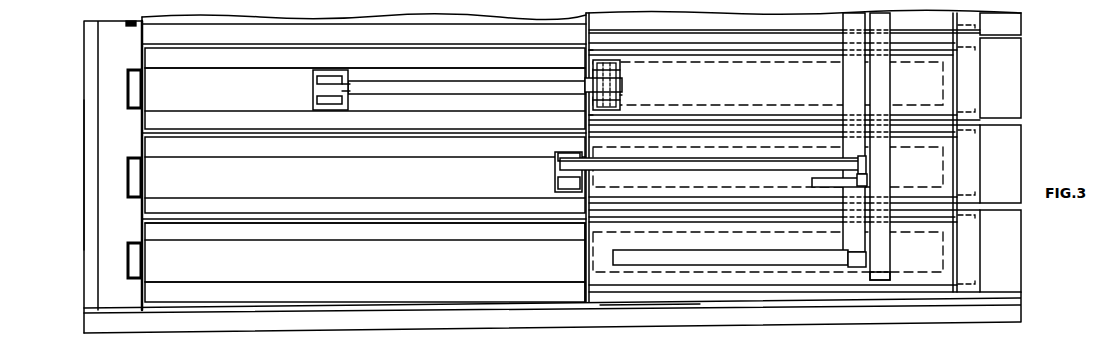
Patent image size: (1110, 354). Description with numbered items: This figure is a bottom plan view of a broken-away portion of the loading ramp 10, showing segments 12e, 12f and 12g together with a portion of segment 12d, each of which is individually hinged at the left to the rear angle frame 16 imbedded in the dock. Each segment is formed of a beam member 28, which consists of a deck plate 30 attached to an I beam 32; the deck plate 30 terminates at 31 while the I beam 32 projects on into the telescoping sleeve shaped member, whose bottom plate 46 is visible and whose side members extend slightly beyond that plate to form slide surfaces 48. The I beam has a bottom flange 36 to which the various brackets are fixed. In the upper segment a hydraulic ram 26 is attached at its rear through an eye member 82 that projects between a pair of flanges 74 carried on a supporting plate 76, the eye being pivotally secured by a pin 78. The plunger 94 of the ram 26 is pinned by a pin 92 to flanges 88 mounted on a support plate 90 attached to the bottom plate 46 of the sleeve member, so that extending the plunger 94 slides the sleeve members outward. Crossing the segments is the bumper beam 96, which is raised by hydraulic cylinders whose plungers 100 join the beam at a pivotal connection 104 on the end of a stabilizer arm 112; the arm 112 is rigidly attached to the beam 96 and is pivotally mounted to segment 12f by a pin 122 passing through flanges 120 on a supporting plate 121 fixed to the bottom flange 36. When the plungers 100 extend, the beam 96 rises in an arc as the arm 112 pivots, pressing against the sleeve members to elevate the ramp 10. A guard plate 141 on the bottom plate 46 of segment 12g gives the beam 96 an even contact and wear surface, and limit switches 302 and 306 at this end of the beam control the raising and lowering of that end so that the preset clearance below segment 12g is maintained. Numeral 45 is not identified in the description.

The loading ramp 10 is at (1062, 103).
The segment 12d is at (1018, 22).
The segment 12e is at (1017, 72).
The segment 12f is at (1019, 153).
The segment 12g is at (1018, 245).
The rear angle frame 16 is at (107, 172).
The ram 26 is at (436, 96).
The beam member 28 is at (248, 96).
The deck plate 30 is at (328, 267).
The end of deck plate 31 is at (583, 282).
The I beam 32 is at (335, 240).
The bottom flange 36 is at (266, 76).
The base rail 45 is at (657, 298).
The bottom plate 46 is at (591, 114).
The slide surface 48 is at (782, 52).
The flange 74 is at (316, 97).
The supporting plate 76 is at (318, 110).
The pin 78 is at (335, 108).
The eye member 82 is at (342, 88).
The flange 88 is at (622, 92).
The support plate 90 is at (620, 100).
The pin 92 is at (591, 62).
The plunger 94 is at (582, 86).
The bumper beam 96 is at (848, 83).
The plunger 100 is at (820, 183).
The pivotal connection 104 is at (862, 175).
The stabilizer arm 112 is at (757, 170).
The flange 120 is at (560, 188).
The supporting plate 121 is at (566, 188).
The pin 122 is at (568, 152).
The guard plate 141 is at (736, 253).
The limit switch 302 is at (851, 252).
The limit switch 306 is at (882, 275).